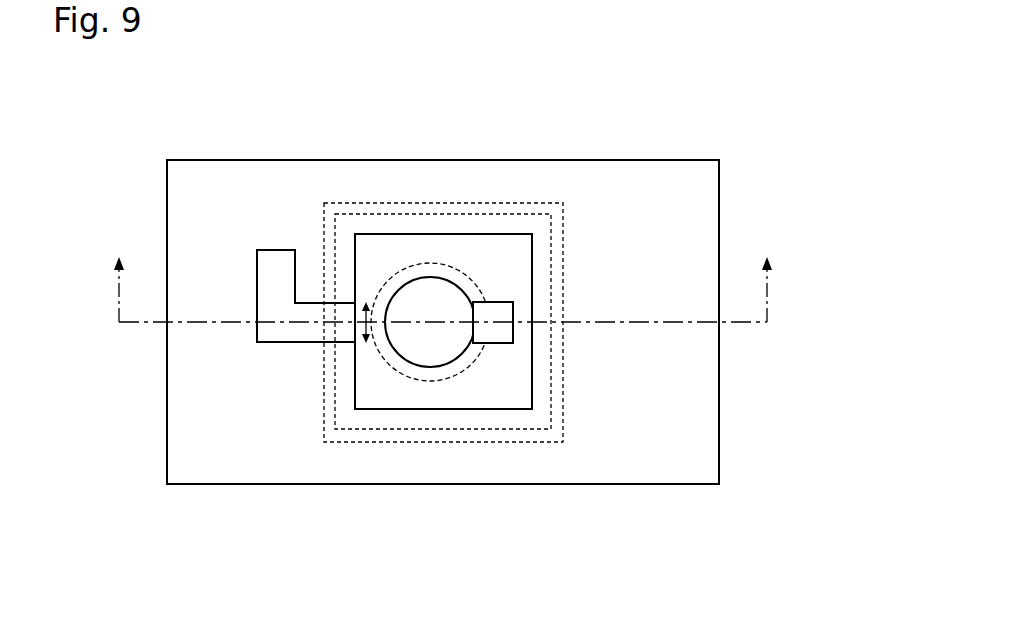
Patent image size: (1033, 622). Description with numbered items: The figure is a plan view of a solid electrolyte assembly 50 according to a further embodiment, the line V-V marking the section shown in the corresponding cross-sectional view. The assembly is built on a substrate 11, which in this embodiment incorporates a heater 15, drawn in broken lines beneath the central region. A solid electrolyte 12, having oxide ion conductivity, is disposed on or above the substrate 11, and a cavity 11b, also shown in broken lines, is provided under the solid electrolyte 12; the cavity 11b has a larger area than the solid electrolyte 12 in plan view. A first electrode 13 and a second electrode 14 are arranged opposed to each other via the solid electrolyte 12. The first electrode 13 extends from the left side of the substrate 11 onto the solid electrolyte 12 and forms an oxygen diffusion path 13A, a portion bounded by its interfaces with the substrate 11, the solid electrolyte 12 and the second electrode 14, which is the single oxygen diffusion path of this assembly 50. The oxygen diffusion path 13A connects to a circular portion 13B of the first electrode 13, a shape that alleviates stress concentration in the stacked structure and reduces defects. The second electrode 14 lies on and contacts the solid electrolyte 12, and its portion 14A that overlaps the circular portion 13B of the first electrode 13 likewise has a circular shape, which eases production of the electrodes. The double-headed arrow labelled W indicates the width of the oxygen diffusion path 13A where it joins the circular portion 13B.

The solid electrolyte assembly 50 is at (797, 108).
The substrate 11 is at (703, 203).
The cavity 11b is at (490, 446).
The solid electrolyte 12 is at (500, 385).
The first electrode 13 is at (268, 250).
The oxygen diffusion path 13A is at (361, 303).
The circular portion 13B is at (432, 262).
The second electrode 14 is at (498, 312).
The portion of the second electrode 14A is at (462, 290).
The heater 15 is at (390, 432).
The width of connecting portion W is at (362, 323).